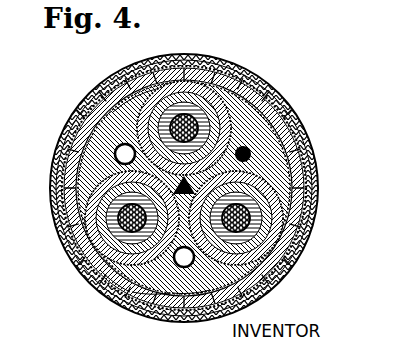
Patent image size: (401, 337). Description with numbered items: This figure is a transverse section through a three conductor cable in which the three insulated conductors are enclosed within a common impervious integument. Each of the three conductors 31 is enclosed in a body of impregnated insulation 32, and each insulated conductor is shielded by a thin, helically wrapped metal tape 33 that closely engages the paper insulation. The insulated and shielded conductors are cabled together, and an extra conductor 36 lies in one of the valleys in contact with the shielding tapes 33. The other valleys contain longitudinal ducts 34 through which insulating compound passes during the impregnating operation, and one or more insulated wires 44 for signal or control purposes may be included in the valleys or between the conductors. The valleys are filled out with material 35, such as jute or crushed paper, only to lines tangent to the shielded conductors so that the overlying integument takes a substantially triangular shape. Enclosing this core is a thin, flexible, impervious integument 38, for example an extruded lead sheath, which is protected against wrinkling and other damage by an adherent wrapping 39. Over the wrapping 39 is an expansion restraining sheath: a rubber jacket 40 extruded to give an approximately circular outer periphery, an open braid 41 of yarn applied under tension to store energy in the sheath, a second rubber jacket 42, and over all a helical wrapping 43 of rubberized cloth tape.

The conductor 31 is at (80, 213).
The impregnated insulation 32 is at (62, 236).
The helically wrapped metal tape 33 is at (290, 112).
The longitudinal duct 34 is at (56, 165).
The valley filler material 35 is at (76, 119).
The extra conductor 36 is at (302, 141).
The impervious integument 38 is at (127, 71).
The adherent wrapping 39 is at (99, 92).
The rubber jacket 40 is at (60, 136).
The open braid 41 is at (143, 313).
The second rubber jacket 42 is at (118, 306).
The helical wrapping of rubberized cloth tape 43 is at (90, 289).
The insulated wire 44 is at (167, 64).